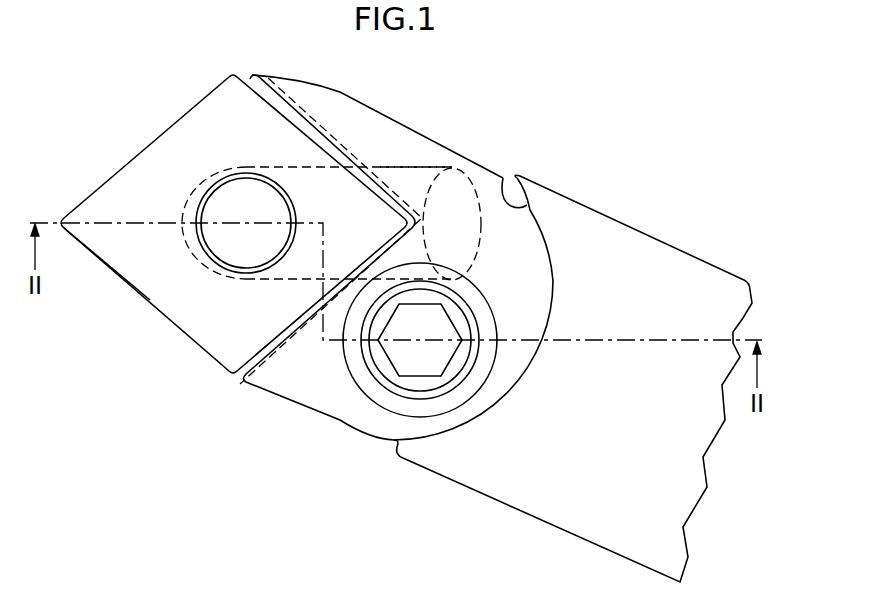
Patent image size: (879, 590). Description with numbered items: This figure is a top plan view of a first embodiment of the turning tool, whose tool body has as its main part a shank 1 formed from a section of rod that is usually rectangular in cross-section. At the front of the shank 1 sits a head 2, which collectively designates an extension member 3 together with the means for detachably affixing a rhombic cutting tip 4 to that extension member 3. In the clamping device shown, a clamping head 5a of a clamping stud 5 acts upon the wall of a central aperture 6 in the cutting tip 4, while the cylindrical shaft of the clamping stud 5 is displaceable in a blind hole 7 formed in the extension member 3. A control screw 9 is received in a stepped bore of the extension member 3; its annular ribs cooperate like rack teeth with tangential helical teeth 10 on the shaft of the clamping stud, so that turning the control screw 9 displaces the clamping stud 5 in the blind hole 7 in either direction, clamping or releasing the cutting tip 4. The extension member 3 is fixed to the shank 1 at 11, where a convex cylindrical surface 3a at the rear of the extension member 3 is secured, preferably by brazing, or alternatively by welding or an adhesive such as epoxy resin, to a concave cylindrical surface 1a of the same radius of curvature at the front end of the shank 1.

The shank 1 is at (663, 258).
The concave cylindrical surface 1a is at (553, 312).
The head 2 is at (158, 125).
The extension member 3 is at (288, 385).
The convex cylindrical surface 3a is at (522, 206).
The cutting tip 4 is at (110, 192).
The clamping stud 5 is at (385, 167).
The clamping head 5a is at (248, 187).
The central aperture 6 is at (202, 205).
The blind hole 7 is at (417, 167).
The control screw 9 is at (467, 358).
The tangential helical teeth 10 is at (456, 262).
The fixing location 11 is at (555, 277).